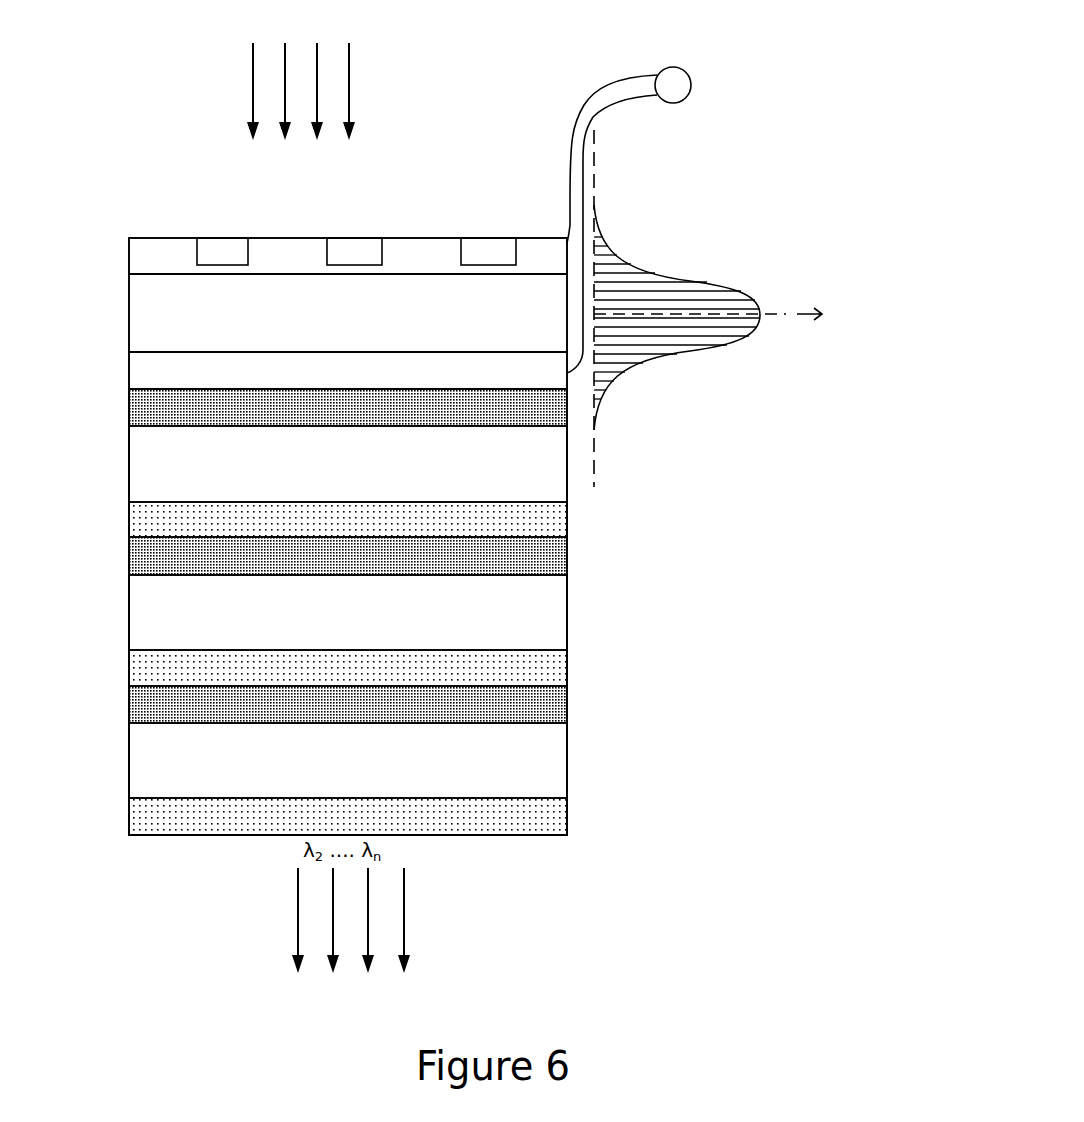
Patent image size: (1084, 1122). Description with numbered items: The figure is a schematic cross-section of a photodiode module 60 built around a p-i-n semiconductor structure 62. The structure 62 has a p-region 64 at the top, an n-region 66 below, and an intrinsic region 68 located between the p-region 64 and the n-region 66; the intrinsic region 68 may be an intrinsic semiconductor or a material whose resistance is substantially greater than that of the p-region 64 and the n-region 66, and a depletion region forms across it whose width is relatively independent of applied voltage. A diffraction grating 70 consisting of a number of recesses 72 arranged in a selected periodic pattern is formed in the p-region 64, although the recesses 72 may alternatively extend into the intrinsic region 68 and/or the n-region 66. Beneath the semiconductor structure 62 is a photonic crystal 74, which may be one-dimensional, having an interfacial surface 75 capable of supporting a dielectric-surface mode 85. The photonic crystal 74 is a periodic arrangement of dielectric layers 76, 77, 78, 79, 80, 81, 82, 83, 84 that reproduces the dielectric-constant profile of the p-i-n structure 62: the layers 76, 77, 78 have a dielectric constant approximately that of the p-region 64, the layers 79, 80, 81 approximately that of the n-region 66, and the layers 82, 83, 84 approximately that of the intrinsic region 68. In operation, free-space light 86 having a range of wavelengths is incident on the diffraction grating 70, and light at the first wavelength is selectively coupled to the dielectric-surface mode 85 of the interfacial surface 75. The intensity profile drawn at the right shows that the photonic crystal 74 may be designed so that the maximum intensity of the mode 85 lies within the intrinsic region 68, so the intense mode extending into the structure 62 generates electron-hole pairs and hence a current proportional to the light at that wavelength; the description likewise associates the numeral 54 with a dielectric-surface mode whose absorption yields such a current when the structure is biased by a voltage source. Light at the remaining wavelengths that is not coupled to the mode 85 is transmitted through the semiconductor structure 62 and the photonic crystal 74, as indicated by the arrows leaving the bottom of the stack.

The dielectric-surface mode 54 is at (678, 66).
The photodiode module 60 is at (722, 190).
The p-i-n semiconductor structure 62 is at (97, 242).
The p-region 64 is at (161, 262).
The n-region 66 is at (348, 370).
The intrinsic region 68 is at (177, 308).
The diffraction grating 70 is at (354, 212).
The recesses 72 is at (218, 250).
The photonic crystal 74 is at (97, 391).
The interfacial surface 75 is at (450, 388).
The dielectric layer 76 is at (348, 407).
The dielectric layer 77 is at (348, 556).
The dielectric layer 78 is at (348, 704).
The dielectric layer 79 is at (348, 519).
The dielectric layer 80 is at (348, 668).
The dielectric layer 81 is at (348, 816).
The dielectric layer 82 is at (348, 464).
The dielectric layer 83 is at (348, 612).
The dielectric layer 84 is at (348, 760).
The dielectric-surface mode 85 is at (696, 259).
The free-space light 86 is at (365, 43).